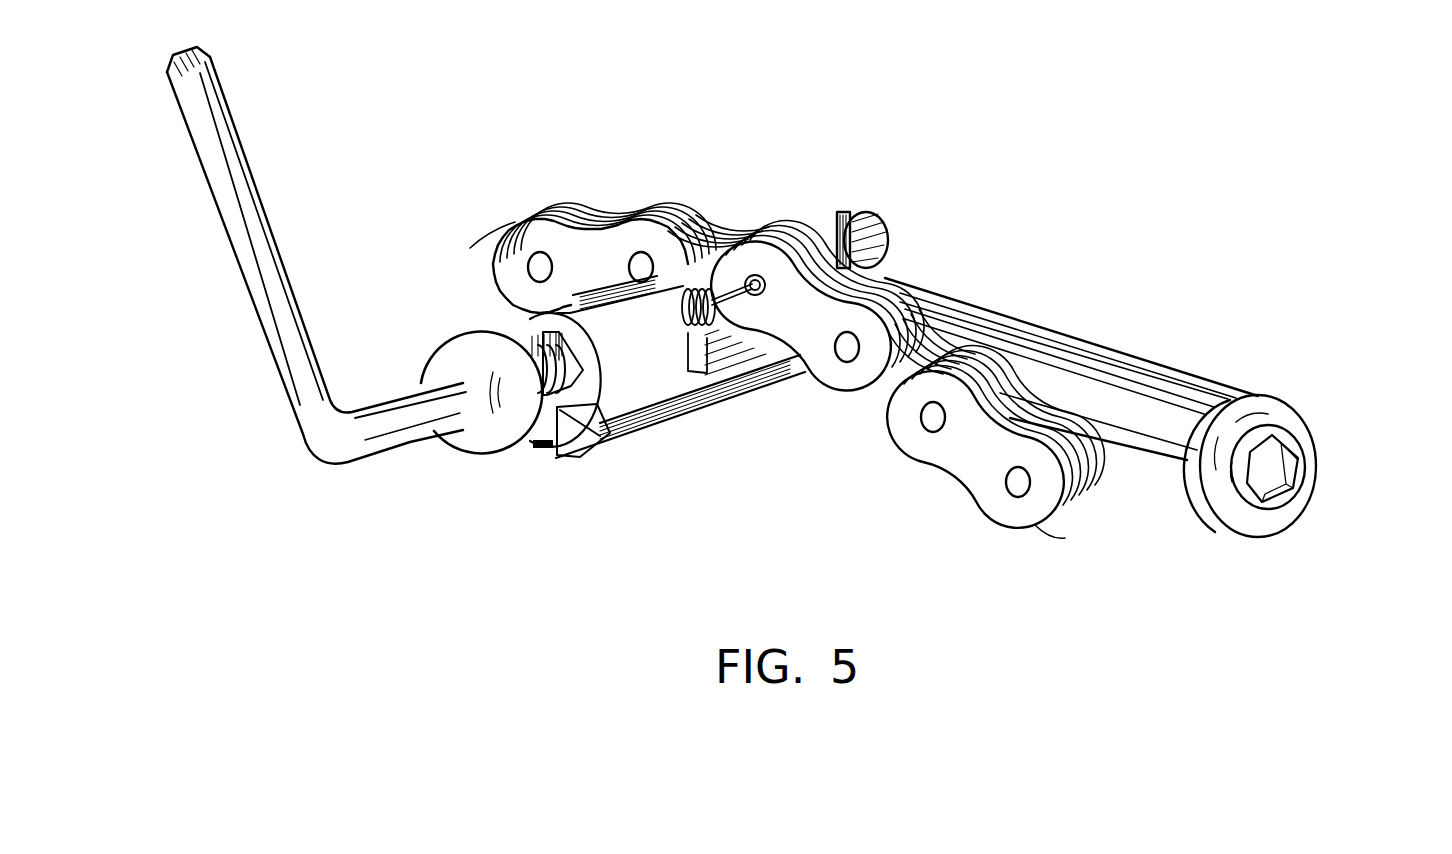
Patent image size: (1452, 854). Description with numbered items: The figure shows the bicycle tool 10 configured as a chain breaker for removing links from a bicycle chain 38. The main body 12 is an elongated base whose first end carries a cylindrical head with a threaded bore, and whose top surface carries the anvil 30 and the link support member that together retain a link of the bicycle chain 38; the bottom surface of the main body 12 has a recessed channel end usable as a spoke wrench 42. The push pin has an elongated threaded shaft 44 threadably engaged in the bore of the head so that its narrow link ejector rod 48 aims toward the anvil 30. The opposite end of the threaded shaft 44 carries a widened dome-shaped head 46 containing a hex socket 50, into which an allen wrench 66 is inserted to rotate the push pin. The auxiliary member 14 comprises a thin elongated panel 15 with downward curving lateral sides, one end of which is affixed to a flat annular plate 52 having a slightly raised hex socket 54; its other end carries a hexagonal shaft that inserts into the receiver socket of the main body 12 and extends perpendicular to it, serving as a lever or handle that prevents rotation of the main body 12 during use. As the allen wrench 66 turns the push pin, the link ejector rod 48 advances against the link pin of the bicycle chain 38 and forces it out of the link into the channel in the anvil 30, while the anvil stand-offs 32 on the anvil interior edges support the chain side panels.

The bicycle tool 10 is at (1105, 203).
The main body 12 is at (787, 383).
The auxiliary member 14 is at (990, 310).
The elongated panel 15 is at (1150, 357).
The anvil 30 is at (867, 230).
The anvil stand-offs 32 is at (838, 210).
The bicycle chain 38 is at (593, 227).
The spoke wrench 42 is at (547, 450).
The threaded shaft 44 is at (633, 437).
The head 46 is at (453, 342).
The link ejector rod 48 is at (735, 290).
The hex socket 50 is at (463, 430).
The annular plate 52 is at (1267, 395).
The hex socket 54 is at (1267, 463).
The allen wrench 66 is at (240, 138).